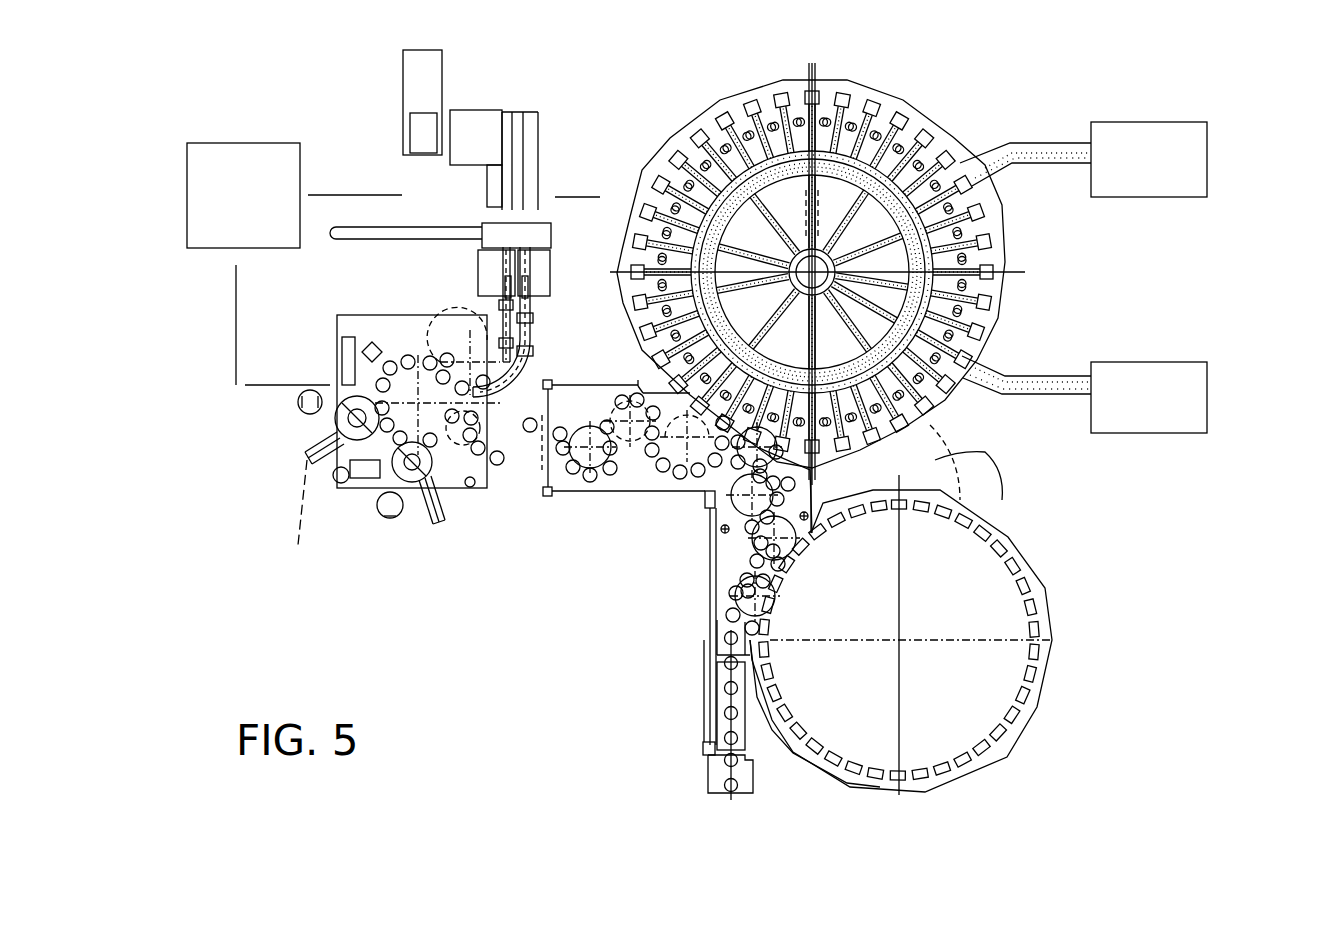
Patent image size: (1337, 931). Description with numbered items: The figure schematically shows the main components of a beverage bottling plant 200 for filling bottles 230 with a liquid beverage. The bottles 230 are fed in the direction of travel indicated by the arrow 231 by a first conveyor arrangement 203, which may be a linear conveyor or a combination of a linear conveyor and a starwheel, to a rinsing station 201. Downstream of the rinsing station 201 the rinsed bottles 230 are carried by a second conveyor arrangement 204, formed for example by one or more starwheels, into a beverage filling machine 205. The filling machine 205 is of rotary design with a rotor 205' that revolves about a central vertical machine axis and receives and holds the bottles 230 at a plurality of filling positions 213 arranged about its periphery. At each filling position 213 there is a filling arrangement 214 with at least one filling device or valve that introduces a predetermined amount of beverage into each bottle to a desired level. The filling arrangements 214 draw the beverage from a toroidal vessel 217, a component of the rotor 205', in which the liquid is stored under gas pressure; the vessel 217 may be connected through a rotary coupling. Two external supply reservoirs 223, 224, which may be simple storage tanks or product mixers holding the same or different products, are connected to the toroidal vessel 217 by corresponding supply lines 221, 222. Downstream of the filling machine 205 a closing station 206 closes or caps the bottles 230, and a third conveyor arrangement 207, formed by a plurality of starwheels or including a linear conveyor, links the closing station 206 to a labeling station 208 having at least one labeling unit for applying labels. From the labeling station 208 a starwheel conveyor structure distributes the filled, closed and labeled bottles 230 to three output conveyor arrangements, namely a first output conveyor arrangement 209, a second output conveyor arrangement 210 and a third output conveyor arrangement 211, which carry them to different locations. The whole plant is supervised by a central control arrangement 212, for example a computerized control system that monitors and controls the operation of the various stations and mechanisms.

The rotary processing machine 200 is at (688, 95).
The rinsing station 201 is at (1068, 534).
The first conveyor arrangement 203 is at (745, 720).
The second conveyor arrangement 204 is at (720, 562).
The beverage filling machine 205 is at (1031, 271).
The rotor 205' is at (938, 123).
The closing station 206 is at (605, 380).
The third conveyor arrangement 207 is at (556, 512).
The labeling station 208 is at (366, 530).
The first output conveyor arrangement 209 is at (533, 220).
The second output conveyor arrangement 210 is at (494, 213).
The third output conveyor arrangement 211 is at (346, 241).
The central control arrangement 212 is at (262, 208).
The filling positions 213 is at (990, 205).
The filling arrangement 214 is at (990, 304).
The toroidal vessel 217 is at (920, 427).
The supply line 221 is at (1037, 143).
The supply line 222 is at (1040, 378).
The external supply reservoir 223 is at (1200, 168).
The external supply reservoir 224 is at (1205, 406).
The bottles 230 is at (735, 736).
The arrow 231 is at (690, 712).